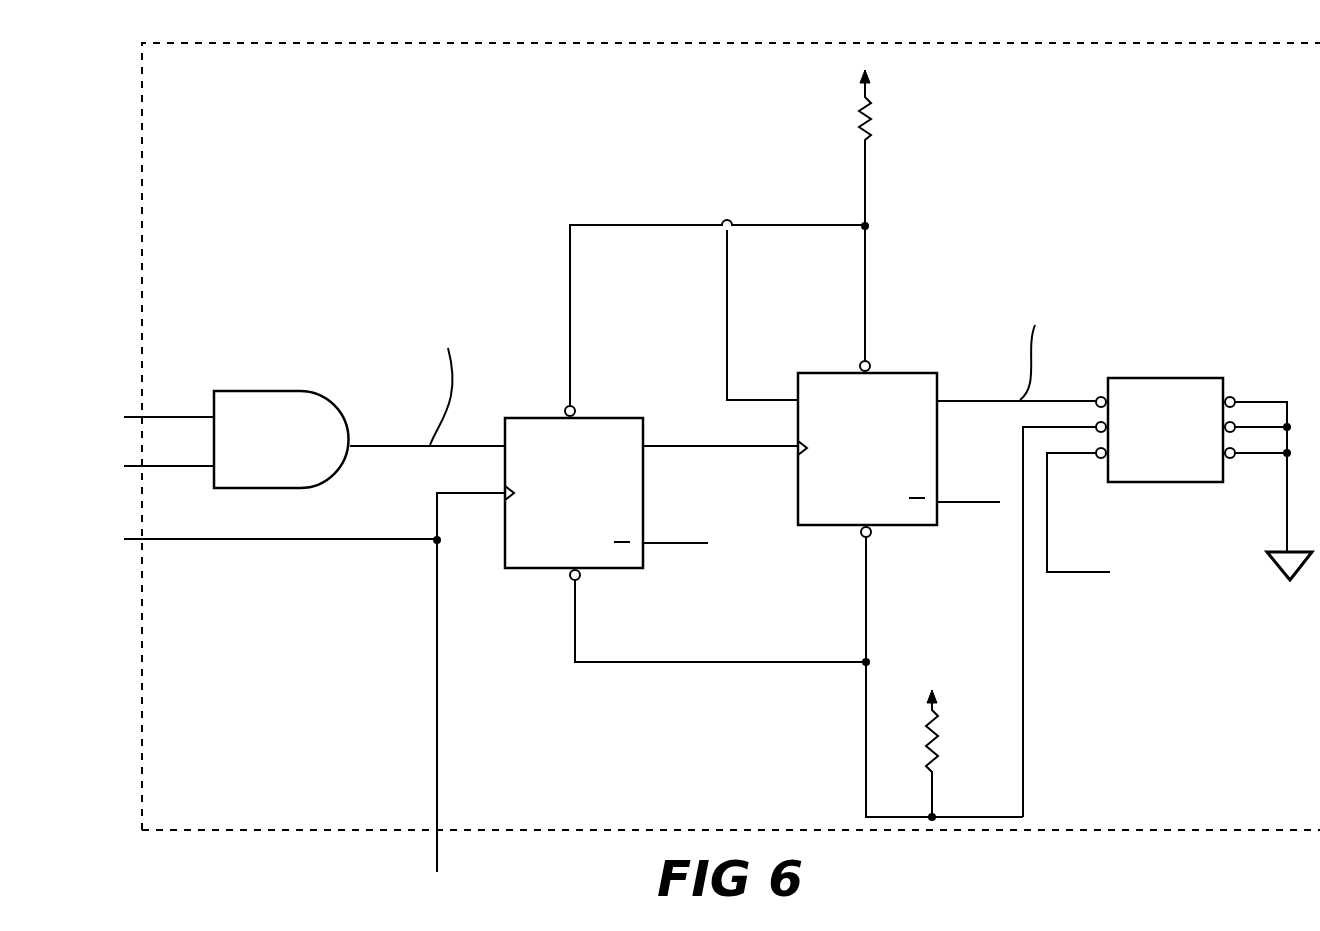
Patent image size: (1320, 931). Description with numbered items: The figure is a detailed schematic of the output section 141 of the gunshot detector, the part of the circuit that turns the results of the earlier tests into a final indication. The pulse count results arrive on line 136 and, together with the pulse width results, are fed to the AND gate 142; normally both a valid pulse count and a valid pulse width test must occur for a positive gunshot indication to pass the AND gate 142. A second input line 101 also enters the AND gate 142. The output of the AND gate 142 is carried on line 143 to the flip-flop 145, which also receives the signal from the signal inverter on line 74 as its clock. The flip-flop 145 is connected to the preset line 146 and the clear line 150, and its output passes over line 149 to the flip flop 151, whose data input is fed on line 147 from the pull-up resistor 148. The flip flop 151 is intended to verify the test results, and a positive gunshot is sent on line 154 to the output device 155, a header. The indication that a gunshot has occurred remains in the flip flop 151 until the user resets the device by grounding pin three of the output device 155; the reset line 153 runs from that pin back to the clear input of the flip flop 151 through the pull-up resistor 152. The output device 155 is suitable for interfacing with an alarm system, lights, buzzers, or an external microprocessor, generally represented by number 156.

The output section 141 is at (397, 43).
The line 136 is at (157, 417).
The second input line to AND gate 101 is at (190, 466).
The AND gate 142 is at (272, 391).
The line 143 is at (384, 445).
The line 74 is at (265, 539).
The flip-flop 145 is at (516, 570).
The preset line of flip-flop U9B 146 is at (570, 290).
The data input line of flip-flop U9A 147 is at (727, 313).
The pull-up resistor R7 148 is at (860, 120).
The connection from Q output of U9B to clock of U9A 149 is at (720, 447).
The clear line of flip-flop U9B 150 is at (720, 664).
The flip flop 151 is at (822, 527).
The pull-up resistor R17 152 is at (932, 730).
The reset line to header 153 is at (1023, 660).
The line 154 is at (1065, 401).
The output device 155 is at (1200, 378).
The external device 156 is at (1287, 513).